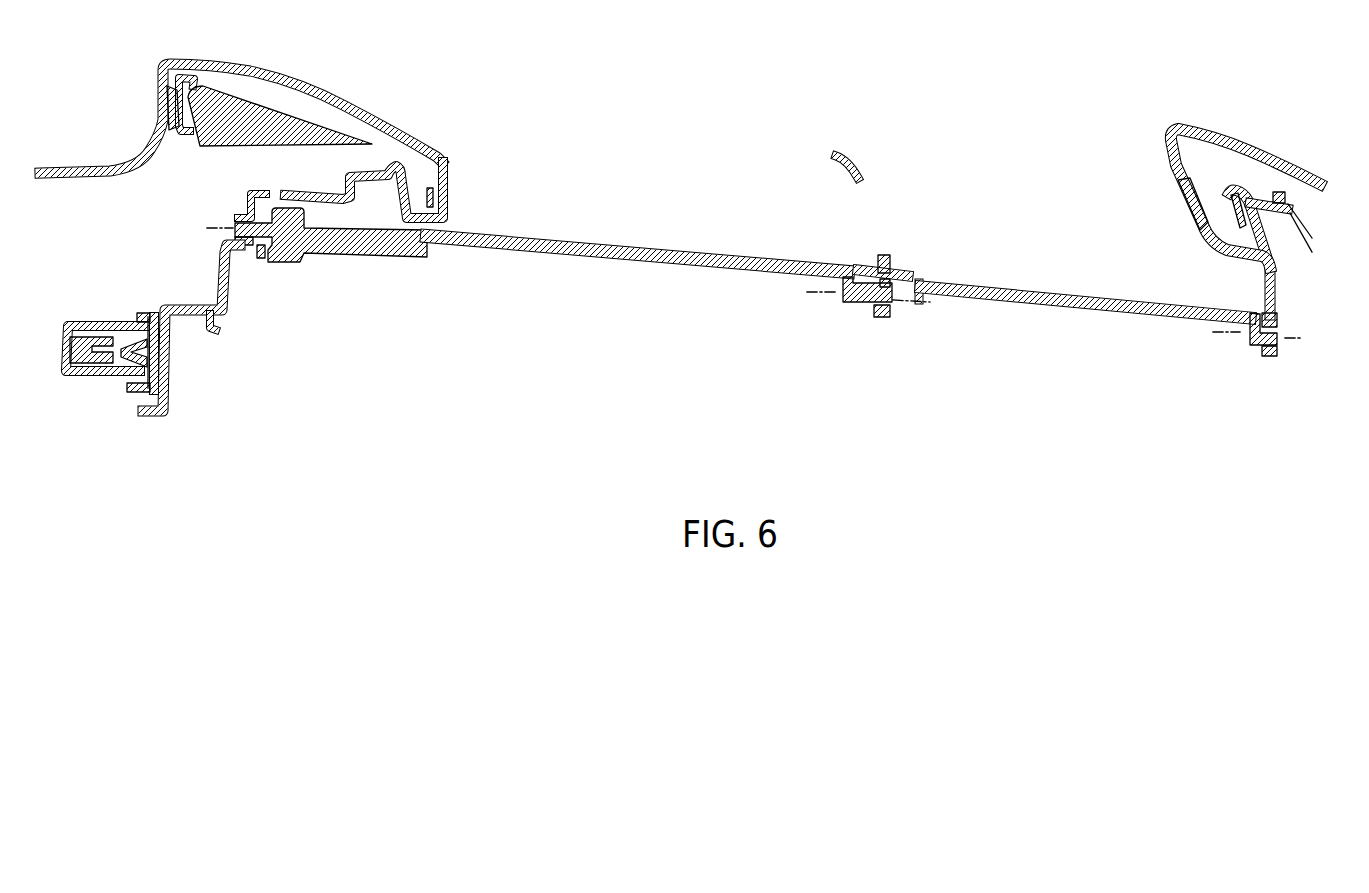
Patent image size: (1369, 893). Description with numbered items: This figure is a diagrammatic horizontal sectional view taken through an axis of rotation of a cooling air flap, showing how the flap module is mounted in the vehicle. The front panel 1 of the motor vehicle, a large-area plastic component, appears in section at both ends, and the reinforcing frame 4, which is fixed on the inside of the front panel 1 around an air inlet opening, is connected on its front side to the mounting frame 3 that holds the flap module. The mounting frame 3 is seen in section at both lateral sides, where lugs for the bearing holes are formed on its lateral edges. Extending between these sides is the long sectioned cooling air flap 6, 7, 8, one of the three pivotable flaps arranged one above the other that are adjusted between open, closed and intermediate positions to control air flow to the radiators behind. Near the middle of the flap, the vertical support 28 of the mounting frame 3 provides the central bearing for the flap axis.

The front panel 1 is at (340, 106).
The mounting frame 3 is at (221, 279).
The reinforcing frame 4 is at (312, 196).
The cooling air flap 6 is at (755, 257).
The cooling air flap 7 is at (755, 269).
The cooling air flap 8 is at (613, 252).
The vertical support 28 is at (888, 271).